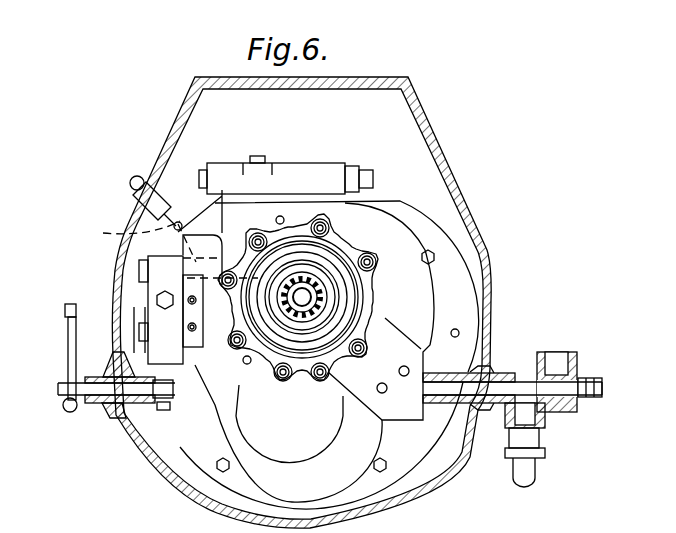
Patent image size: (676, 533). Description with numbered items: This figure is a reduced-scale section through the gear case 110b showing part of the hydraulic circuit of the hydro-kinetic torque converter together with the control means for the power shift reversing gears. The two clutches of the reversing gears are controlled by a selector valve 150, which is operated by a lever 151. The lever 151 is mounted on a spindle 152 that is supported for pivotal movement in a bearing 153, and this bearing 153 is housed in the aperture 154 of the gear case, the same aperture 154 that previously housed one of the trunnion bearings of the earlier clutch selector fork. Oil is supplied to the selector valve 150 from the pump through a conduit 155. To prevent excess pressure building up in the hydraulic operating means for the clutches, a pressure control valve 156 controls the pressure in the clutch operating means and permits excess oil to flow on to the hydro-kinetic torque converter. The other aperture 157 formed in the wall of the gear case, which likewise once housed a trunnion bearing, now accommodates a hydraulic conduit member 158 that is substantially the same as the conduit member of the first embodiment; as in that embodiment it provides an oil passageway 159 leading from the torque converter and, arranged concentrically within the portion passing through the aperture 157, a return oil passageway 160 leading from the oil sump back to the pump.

The housing 110b is at (488, 252).
The selector valve 150 is at (150, 292).
The lever 151 is at (67, 337).
The spindle 152 is at (92, 391).
The bearing 153 is at (102, 404).
The aperture 154 is at (127, 408).
The conduit 155 is at (159, 227).
The pressure control valve 156 is at (303, 172).
The aperture 157 is at (491, 411).
The hydraulic conduit member 158 is at (519, 356).
The shaft 159 is at (490, 375).
The fitting 160 is at (532, 418).